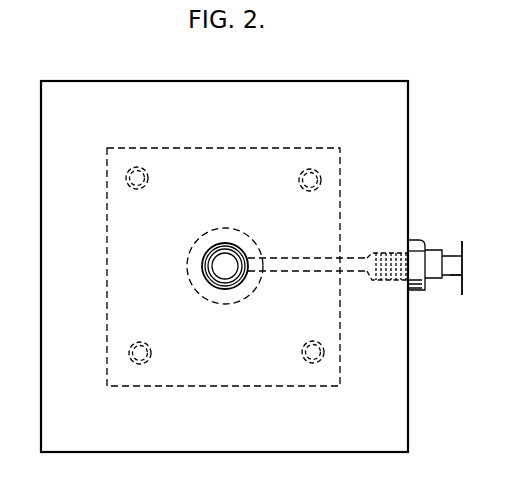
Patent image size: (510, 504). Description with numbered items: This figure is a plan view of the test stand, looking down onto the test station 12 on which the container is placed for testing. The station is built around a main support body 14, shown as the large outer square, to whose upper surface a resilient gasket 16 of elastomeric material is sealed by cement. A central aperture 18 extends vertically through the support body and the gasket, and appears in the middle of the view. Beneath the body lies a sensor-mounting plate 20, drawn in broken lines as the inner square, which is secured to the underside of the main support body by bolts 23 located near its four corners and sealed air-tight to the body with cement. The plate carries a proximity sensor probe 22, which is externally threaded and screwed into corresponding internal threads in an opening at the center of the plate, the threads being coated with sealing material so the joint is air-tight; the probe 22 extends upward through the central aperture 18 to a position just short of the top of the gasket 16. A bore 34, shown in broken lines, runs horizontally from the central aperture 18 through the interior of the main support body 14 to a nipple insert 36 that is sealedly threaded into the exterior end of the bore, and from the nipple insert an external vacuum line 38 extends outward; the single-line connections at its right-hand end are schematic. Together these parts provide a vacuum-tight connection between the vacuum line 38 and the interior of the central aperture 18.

The test station 12 is at (368, 82).
The main support body 14 is at (108, 452).
The resilient gasket 16 is at (97, 118).
The central aperture 18 is at (221, 252).
The sensor-mounting plate 20 is at (286, 148).
The proximity sensor probe 22 is at (230, 262).
The bolts 23 is at (141, 168).
The bore 34 is at (303, 262).
The nipple insert 36 is at (392, 252).
The external vacuum line 38 is at (450, 276).